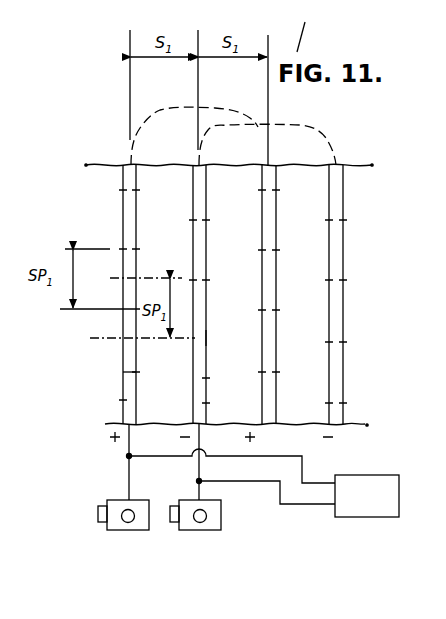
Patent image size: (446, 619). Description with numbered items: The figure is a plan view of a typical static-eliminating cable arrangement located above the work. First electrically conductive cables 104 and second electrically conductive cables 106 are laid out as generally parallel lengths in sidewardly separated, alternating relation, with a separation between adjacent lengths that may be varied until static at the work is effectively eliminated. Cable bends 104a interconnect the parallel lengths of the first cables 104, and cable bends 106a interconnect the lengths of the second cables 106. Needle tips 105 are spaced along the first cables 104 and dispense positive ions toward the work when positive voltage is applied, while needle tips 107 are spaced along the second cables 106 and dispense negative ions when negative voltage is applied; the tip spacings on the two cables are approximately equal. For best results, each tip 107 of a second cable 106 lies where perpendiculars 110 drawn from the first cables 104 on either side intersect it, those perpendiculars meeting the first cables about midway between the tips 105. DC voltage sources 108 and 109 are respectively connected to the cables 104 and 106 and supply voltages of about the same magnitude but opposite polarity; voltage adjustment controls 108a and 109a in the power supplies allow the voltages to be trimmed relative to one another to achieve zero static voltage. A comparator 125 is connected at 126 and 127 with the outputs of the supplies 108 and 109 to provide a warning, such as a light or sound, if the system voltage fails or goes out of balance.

The first cables 104 is at (277, 238).
The cable bends 104a is at (153, 113).
The needle tips 105 is at (119, 372).
The second cables 106 is at (344, 263).
The cable bends 106a is at (287, 121).
The needle tips 107 is at (207, 339).
The DC voltage source 108 is at (112, 531).
The voltage adjustment control 108a is at (98, 512).
The DC voltage source 109 is at (197, 531).
The voltage adjustment control 109a is at (173, 522).
The perpendiculars 110 is at (152, 278).
The comparator 125 is at (355, 508).
The connection 126 is at (303, 466).
The connection 127 is at (288, 505).